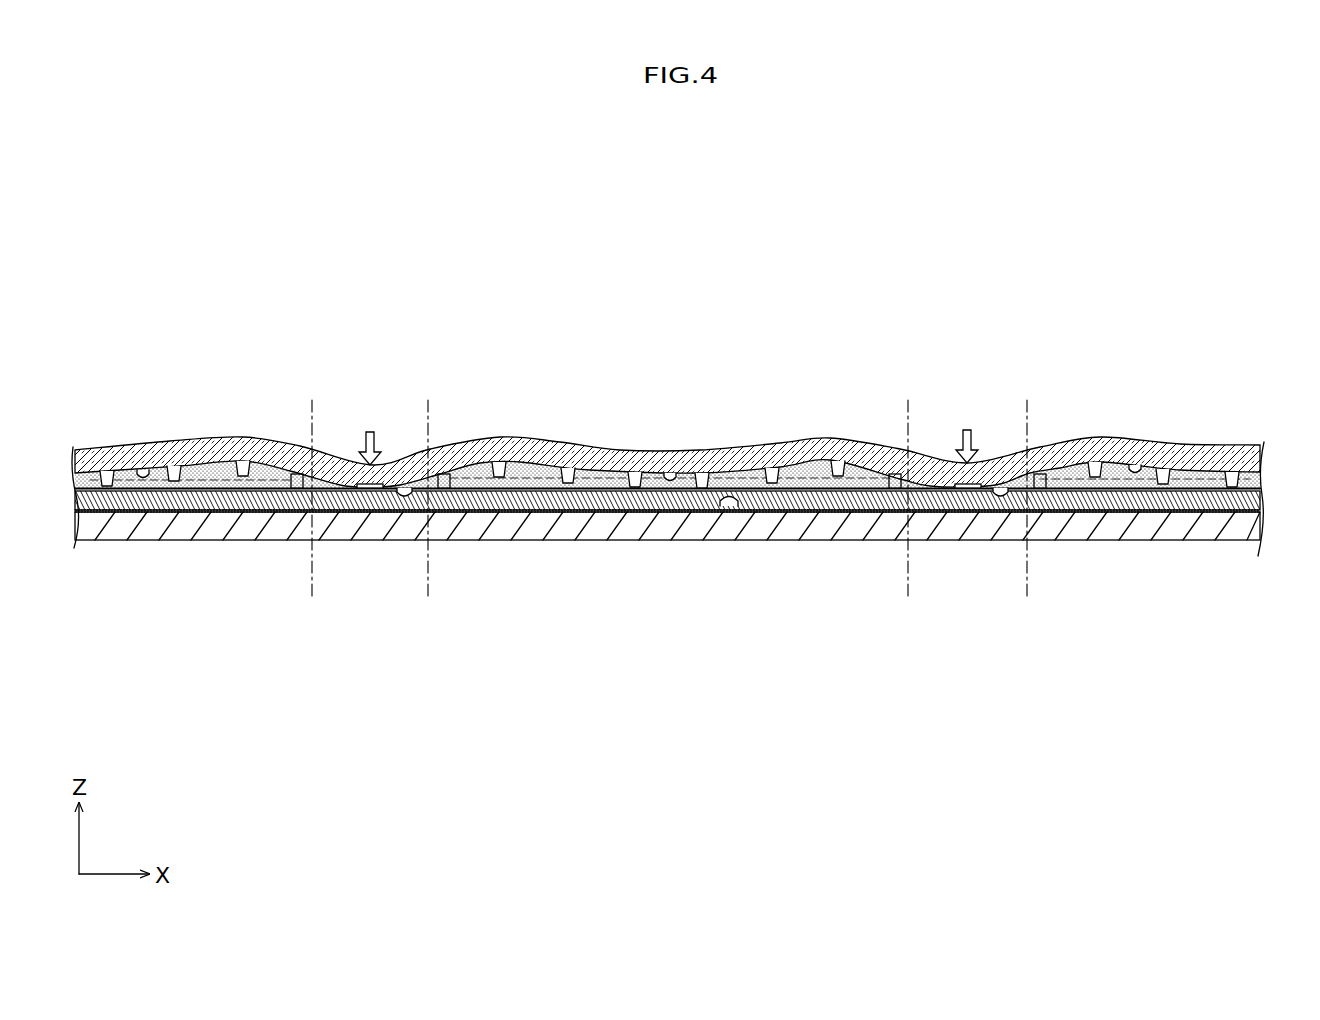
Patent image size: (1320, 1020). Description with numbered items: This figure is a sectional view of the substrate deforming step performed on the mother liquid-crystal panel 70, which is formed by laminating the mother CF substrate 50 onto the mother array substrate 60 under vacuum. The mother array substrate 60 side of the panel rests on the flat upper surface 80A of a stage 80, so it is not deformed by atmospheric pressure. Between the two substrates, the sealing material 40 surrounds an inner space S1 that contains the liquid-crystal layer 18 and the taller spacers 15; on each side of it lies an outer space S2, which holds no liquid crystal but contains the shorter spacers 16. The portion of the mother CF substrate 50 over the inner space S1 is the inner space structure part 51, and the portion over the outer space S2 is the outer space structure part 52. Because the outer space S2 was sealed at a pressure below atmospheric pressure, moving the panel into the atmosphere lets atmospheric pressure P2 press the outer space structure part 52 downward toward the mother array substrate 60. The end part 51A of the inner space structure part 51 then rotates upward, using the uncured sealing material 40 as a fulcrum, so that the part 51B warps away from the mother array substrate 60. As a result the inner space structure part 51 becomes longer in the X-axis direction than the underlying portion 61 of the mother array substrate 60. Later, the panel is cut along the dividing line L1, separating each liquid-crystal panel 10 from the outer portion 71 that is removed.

The mother liquid-crystal panel 70 is at (180, 300).
The liquid-crystal panel 10 is at (178, 522).
The portion of the mother array substrate configuring the inner space 61 is at (105, 497).
The sealing material 40 is at (293, 481).
The liquid-crystal layer 18 is at (207, 485).
The inner space structure part 51 is at (118, 455).
The part of the inner space structure part 51B is at (275, 455).
The end part of the inner space structure part 51A is at (281, 452).
The spacers 15 is at (632, 480).
The inner space S1 is at (144, 473).
The outer space structure part 52 is at (337, 460).
The outer space S2 is at (396, 483).
The atmospheric pressure P2 is at (670, 432).
The spacers 16 is at (373, 492).
The outer portion 71 is at (348, 515).
The stage 80 is at (698, 520).
The upper surface 80A is at (731, 507).
The dividing line L1 is at (658, 515).
The mother CF substrate 50 is at (1232, 465).
The mother array substrate 60 is at (1250, 500).